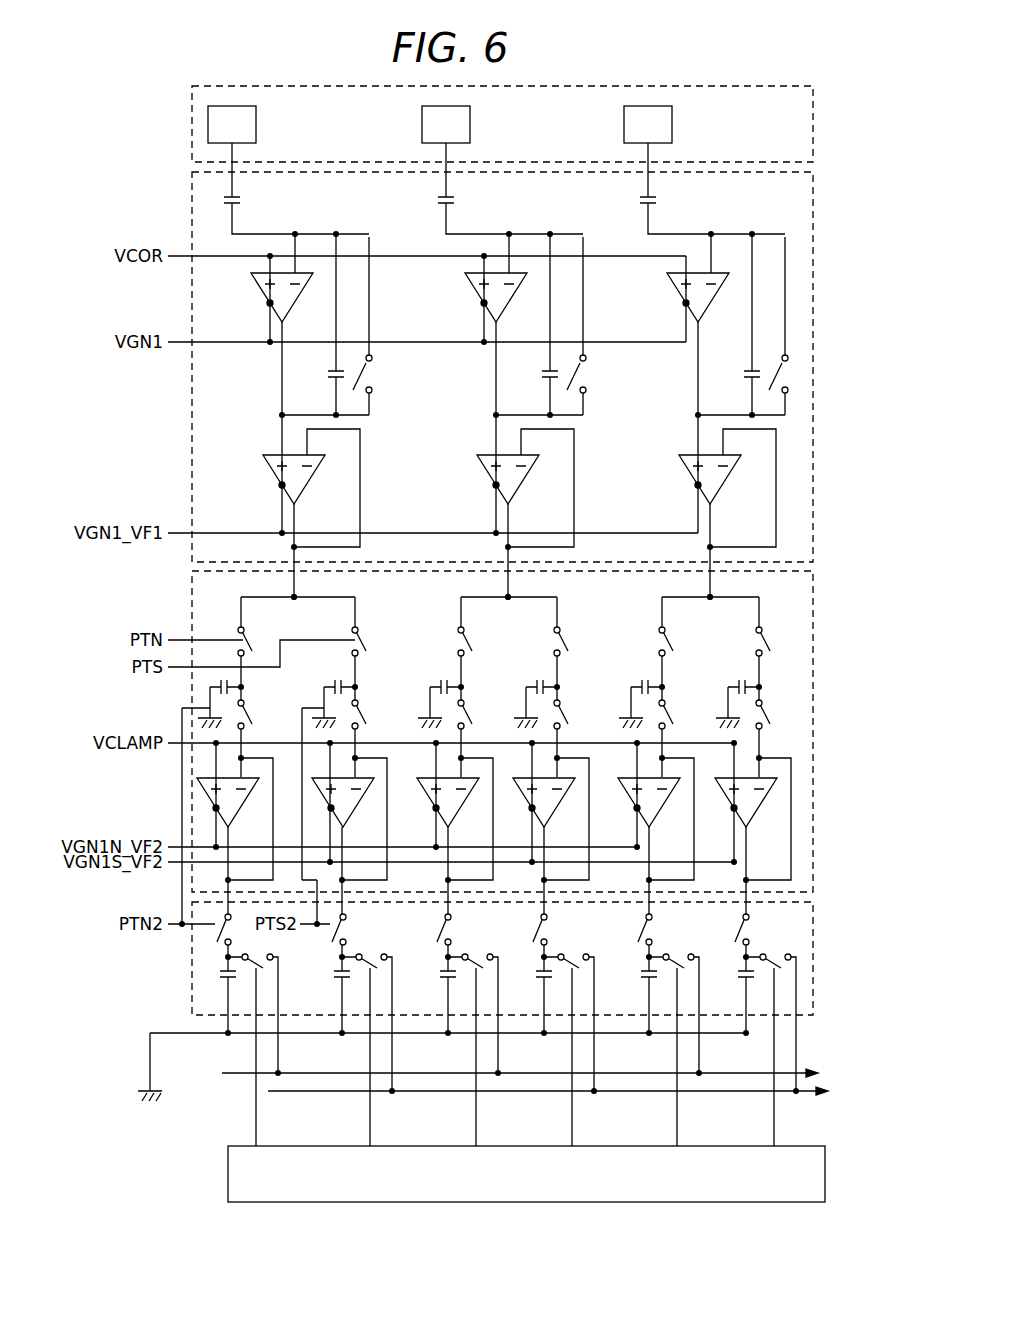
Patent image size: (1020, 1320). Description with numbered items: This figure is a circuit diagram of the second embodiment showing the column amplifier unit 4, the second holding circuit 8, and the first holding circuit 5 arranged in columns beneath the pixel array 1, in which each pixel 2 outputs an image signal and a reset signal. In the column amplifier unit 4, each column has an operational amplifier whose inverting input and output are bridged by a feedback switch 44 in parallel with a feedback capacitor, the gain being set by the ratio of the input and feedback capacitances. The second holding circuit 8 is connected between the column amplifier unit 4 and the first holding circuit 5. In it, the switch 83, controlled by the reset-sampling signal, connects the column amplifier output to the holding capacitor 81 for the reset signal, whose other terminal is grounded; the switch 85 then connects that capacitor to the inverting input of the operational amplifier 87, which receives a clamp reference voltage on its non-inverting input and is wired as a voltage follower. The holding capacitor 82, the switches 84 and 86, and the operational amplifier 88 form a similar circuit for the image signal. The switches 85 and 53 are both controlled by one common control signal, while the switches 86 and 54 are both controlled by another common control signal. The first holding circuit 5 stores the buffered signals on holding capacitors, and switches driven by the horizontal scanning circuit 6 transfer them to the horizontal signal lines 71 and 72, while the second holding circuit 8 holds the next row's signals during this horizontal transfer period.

The pixel array 1 is at (190, 118).
The pixel 2 is at (258, 125).
The column amplifier unit 4 is at (190, 205).
The feedback switch 44 is at (372, 375).
The second holding circuit 8 is at (190, 698).
The holding capacitor 81 is at (222, 678).
The holding capacitor 82 is at (336, 682).
The switch 83 is at (246, 630).
The switch 84 is at (362, 632).
The switch 85 is at (251, 722).
The switch 86 is at (363, 724).
The operational amplifier 87 is at (245, 810).
The operational amplifier 88 is at (359, 810).
The first holding circuit 5 is at (190, 993).
The switch 53 is at (210, 937).
The switch 54 is at (348, 932).
The horizontal scanning circuit 6 is at (226, 1170).
The horizontal signal line 71 is at (230, 1078).
The horizontal signal line 72 is at (800, 1096).